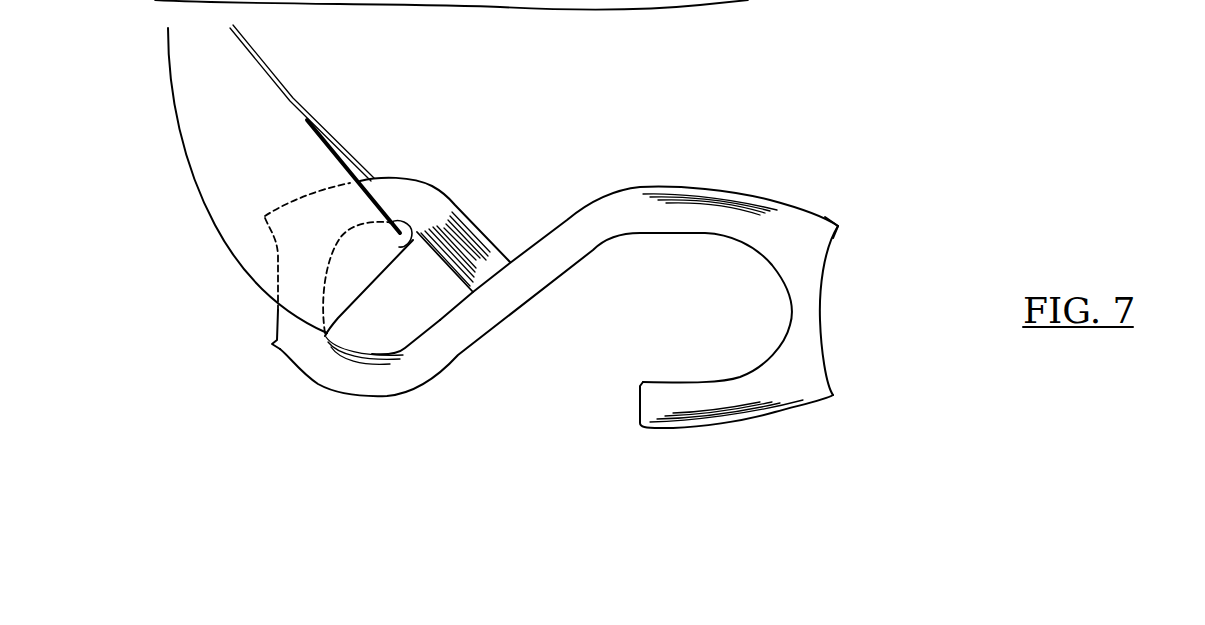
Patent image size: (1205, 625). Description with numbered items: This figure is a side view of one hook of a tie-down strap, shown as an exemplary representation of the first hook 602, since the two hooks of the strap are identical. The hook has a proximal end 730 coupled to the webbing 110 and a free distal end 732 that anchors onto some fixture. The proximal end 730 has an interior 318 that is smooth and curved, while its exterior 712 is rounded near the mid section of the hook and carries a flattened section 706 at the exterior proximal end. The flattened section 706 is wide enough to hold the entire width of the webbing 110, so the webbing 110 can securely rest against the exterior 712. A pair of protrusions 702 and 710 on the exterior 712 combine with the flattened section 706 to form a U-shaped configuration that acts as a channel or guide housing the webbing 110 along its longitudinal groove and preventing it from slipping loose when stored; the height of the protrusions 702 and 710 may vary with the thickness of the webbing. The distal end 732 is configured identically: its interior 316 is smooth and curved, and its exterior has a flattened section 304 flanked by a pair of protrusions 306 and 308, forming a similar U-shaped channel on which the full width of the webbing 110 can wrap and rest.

The webbing 110 is at (159, 93).
The first hook 602 is at (632, 108).
The protrusion 702 is at (255, 345).
The flattened section 706 is at (273, 272).
The protrusion 710 is at (257, 212).
The exterior of proximal end 712 is at (430, 185).
The proximal end 730 is at (400, 142).
The distal end 732 is at (792, 170).
The flattened section 304 is at (820, 308).
The protrusion 306 is at (846, 232).
The protrusion 308 is at (842, 394).
The interior of distal end 316 is at (792, 313).
The interior of proximal end 318 is at (365, 351).